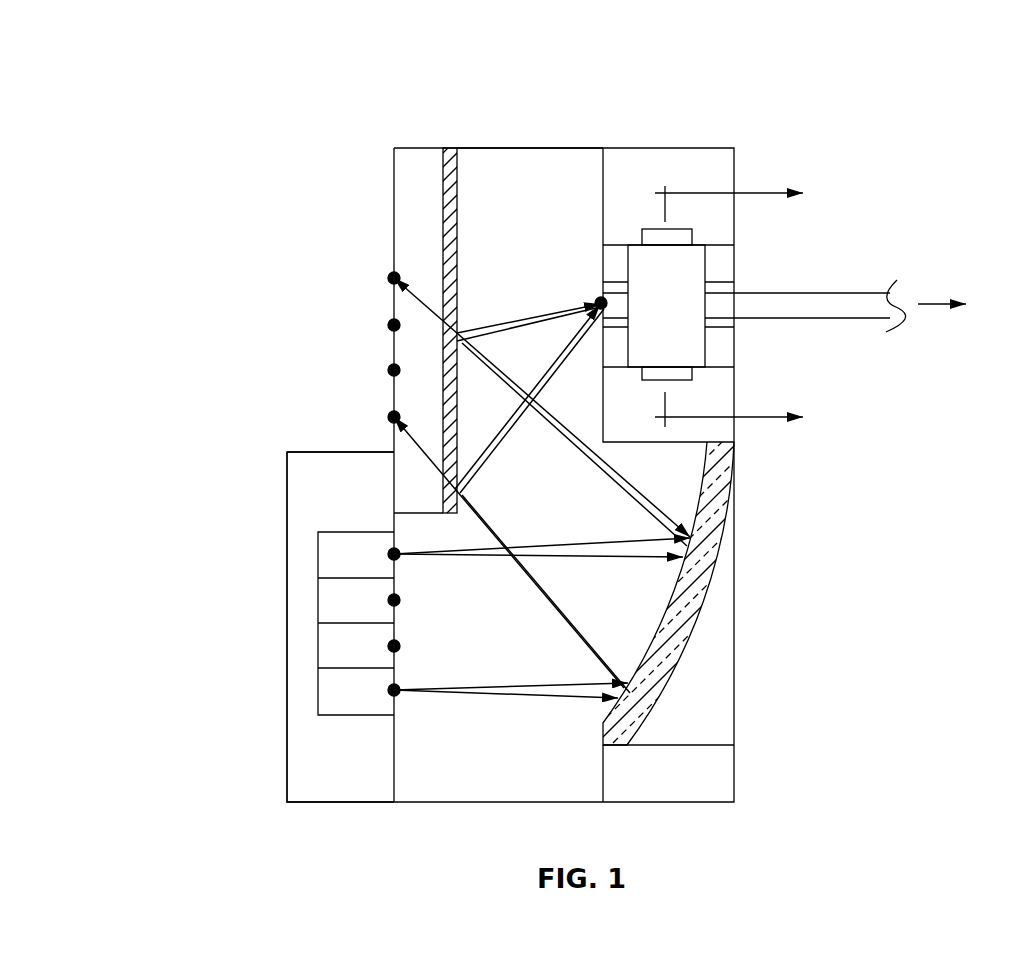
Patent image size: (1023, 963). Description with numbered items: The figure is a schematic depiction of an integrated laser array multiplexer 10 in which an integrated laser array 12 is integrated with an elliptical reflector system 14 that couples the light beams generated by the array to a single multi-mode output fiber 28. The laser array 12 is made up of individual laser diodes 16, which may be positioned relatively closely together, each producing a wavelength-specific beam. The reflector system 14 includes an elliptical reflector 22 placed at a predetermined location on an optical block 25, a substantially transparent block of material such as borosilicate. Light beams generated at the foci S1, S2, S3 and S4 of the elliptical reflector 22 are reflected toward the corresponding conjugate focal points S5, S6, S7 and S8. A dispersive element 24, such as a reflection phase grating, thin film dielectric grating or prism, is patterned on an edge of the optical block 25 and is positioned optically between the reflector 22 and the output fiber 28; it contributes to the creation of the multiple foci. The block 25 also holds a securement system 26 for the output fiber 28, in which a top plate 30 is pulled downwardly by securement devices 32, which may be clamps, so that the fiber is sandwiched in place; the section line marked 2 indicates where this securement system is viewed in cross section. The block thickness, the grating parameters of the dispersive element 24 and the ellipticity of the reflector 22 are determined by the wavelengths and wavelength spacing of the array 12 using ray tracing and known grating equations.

The integrated laser array multiplexer 10 is at (235, 280).
The integrated laser array 12 is at (327, 518).
The elliptical reflector system 14 is at (660, 133).
The laser diodes 16 is at (343, 558).
The elliptical reflector 22 is at (713, 583).
The dispersive element 24 is at (443, 201).
The optical block 25 is at (487, 170).
The securement system 26 is at (713, 243).
The output fiber 28 is at (838, 303).
The top plate 30 is at (690, 276).
The securement devices 32 is at (680, 375).
The section line 2- 2 is at (742, 306).
The focus S1 is at (401, 560).
The focus S2 is at (412, 601).
The focus S3 is at (412, 647).
The focus S4 is at (398, 697).
The conjugate focal point S5 is at (374, 418).
The conjugate focal point S6 is at (374, 371).
The conjugate focal point S7 is at (374, 326).
The conjugate focal point S8 is at (374, 279).